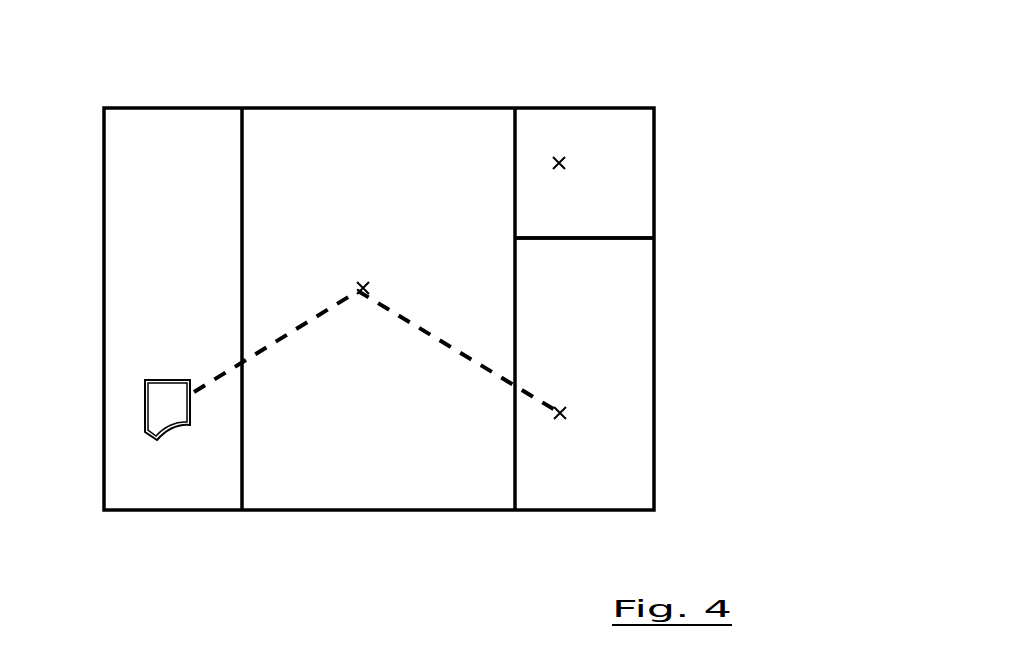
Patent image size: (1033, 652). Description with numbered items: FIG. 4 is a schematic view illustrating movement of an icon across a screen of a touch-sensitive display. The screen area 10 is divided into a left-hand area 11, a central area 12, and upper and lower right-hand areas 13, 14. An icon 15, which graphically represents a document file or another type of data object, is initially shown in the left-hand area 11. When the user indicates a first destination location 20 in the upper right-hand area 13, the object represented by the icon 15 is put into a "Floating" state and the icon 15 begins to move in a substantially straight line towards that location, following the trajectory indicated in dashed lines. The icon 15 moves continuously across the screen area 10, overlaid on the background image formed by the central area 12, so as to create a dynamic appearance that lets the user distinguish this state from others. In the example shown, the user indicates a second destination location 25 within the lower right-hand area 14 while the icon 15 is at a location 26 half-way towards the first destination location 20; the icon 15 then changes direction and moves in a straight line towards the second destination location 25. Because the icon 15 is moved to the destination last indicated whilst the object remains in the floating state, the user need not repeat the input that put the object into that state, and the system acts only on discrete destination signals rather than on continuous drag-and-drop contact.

The screen area 10 is at (412, 66).
The left-hand area 11 is at (205, 118).
The central area 12 is at (466, 120).
The upper right-hand area 13 is at (637, 130).
The lower right-hand area 14 is at (637, 272).
The icon 15 is at (162, 392).
The first destination location 20 is at (569, 138).
The second destination location 25 is at (582, 392).
The location 26 is at (385, 268).